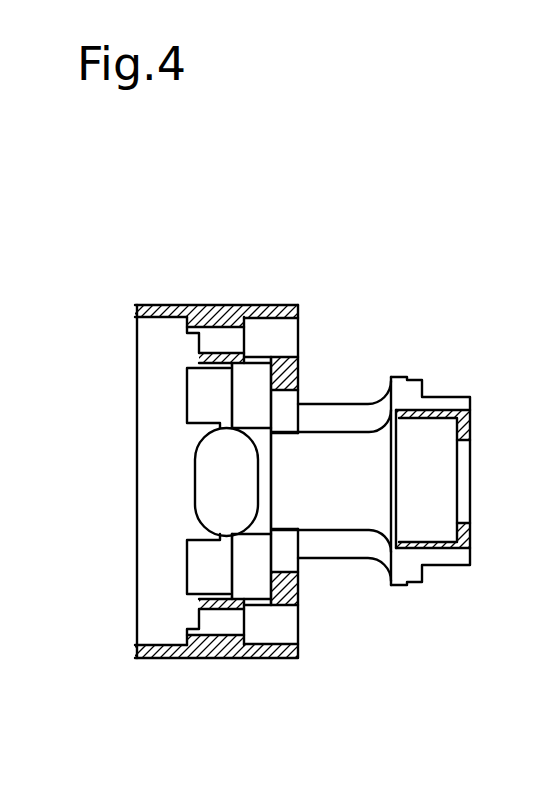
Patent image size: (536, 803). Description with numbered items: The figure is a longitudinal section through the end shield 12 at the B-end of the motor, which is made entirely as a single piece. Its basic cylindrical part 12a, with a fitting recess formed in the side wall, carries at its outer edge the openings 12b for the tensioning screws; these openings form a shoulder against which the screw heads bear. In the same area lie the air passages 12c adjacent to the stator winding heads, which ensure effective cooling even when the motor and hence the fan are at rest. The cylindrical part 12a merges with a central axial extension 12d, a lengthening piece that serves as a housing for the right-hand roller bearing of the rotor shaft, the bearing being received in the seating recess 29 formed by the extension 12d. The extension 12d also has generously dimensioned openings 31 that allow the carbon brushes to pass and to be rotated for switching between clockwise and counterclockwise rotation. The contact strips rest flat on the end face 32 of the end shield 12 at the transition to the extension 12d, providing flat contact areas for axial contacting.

The end shield 12 is at (272, 305).
The basic cylindrical part 12a is at (181, 306).
The openings 12b is at (212, 307).
The air passages 12c is at (201, 494).
The central axial extension 12d is at (372, 389).
The seating recess 29 is at (435, 396).
The openings 31 is at (346, 545).
The end face 32 is at (298, 373).